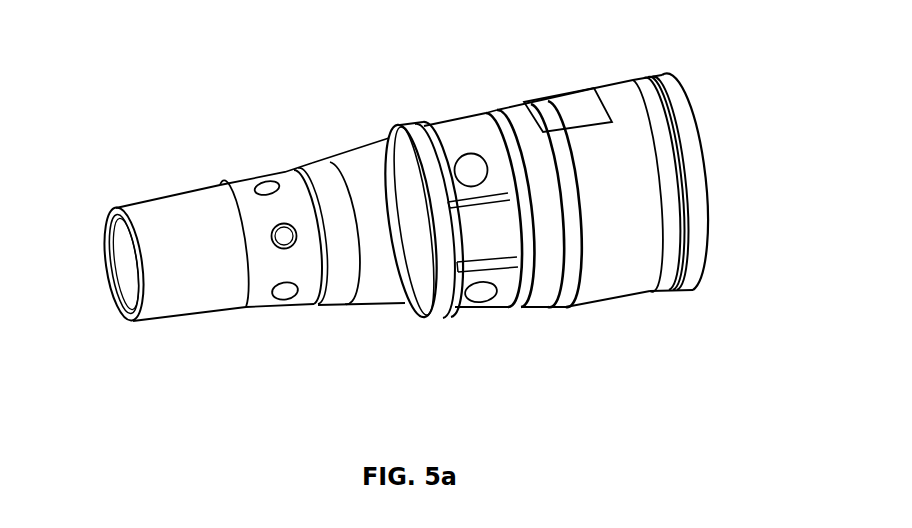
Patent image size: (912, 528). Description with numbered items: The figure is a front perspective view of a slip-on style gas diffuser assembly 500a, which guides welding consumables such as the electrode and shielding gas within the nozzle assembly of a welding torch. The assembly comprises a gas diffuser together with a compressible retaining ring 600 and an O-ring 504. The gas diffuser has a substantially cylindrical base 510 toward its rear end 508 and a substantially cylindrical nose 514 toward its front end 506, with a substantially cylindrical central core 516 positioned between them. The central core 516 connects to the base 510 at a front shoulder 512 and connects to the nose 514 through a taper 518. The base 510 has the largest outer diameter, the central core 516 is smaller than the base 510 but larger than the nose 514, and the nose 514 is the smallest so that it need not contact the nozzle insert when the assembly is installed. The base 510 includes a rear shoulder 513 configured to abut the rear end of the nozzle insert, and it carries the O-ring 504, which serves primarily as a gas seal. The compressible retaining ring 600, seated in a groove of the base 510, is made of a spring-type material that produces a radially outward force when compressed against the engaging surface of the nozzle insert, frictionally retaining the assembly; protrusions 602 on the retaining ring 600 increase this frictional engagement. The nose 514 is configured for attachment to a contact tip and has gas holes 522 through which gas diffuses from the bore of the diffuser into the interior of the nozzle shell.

The slip-on style gas diffuser assembly 500a is at (164, 38).
The front end 506 is at (107, 280).
The nose 514 is at (178, 262).
The gas holes 522 is at (264, 230).
The taper 518 is at (310, 178).
The central core 516 is at (375, 158).
The front shoulder 512 is at (425, 130).
The compressible retaining ring 600 is at (451, 112).
The protrusions 602 is at (482, 296).
The rear shoulder 513 is at (513, 104).
The base 510 is at (607, 305).
The O-ring 504 is at (673, 291).
The rear end 508 is at (705, 165).